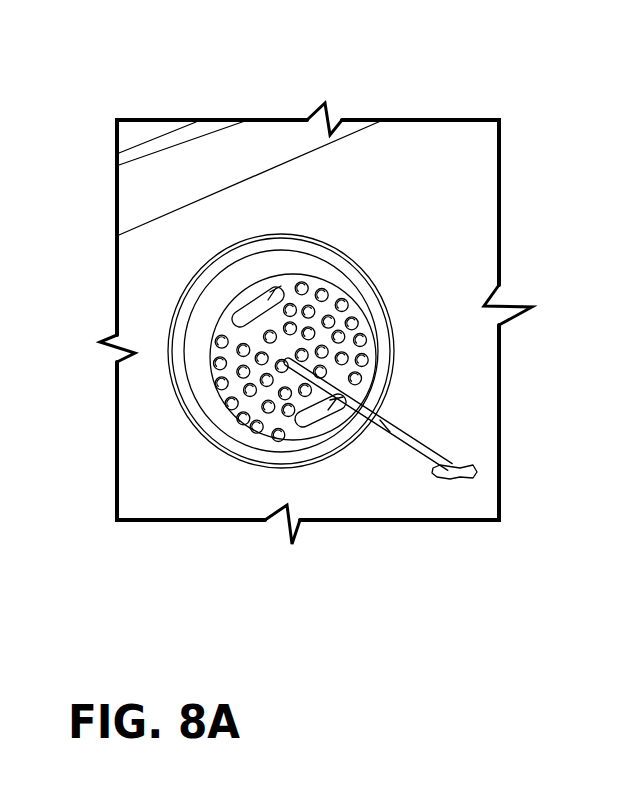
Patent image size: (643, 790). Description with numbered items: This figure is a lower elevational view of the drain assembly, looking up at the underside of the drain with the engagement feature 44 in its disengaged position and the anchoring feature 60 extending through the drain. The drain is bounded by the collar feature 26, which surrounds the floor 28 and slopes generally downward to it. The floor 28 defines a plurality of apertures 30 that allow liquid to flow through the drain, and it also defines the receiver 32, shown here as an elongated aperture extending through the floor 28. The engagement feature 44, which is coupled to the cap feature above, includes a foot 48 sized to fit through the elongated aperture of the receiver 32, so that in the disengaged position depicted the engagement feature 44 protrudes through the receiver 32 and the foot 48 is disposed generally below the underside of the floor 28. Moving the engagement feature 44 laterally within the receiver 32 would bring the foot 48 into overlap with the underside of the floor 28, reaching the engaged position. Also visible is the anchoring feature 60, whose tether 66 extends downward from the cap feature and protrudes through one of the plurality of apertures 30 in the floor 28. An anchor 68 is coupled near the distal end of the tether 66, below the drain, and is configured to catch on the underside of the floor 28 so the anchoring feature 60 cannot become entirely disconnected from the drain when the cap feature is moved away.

The collar feature 26 is at (327, 268).
The floor 28 is at (350, 303).
The plurality of apertures 30 is at (367, 373).
The receiver 32 is at (288, 345).
The engagement feature 44 is at (278, 286).
The foot 48 is at (248, 293).
The anchoring feature 60 is at (403, 422).
The tether 66 is at (385, 427).
The anchor 68 is at (477, 477).